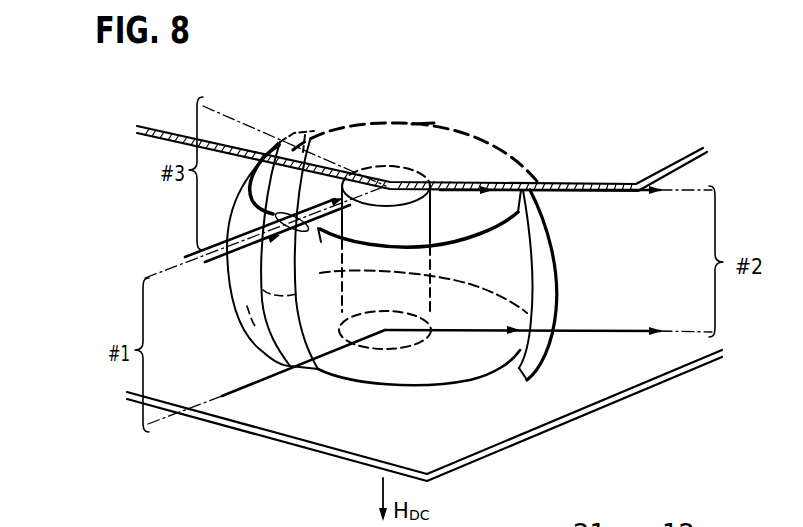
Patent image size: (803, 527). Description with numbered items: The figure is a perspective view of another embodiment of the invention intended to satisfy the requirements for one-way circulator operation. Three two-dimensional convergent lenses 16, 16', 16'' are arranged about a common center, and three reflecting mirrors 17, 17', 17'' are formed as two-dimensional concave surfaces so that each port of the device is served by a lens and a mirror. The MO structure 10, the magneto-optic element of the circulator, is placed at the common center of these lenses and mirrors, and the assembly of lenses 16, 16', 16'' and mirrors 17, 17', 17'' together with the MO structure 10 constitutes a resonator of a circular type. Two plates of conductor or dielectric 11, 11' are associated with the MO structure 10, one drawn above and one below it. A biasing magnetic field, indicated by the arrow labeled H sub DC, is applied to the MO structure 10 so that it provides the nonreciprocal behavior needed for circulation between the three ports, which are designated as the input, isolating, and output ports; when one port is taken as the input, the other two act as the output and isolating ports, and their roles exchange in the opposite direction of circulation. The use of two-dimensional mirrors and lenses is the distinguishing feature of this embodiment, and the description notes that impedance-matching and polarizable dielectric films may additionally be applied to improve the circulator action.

The MO structure 10 is at (423, 172).
The plate of conductor or dielectric 11 is at (453, 167).
The plate of conductor or dielectric 11' is at (424, 415).
The two-dimensional convergent lens 16 is at (372, 318).
The two-dimensional convergent lens 16' is at (574, 285).
The two-dimensional convergent lens 16'' is at (407, 133).
The reflecting mirror 17 is at (437, 101).
The reflecting mirror 17' is at (200, 191).
The reflecting mirror 17'' is at (414, 430).